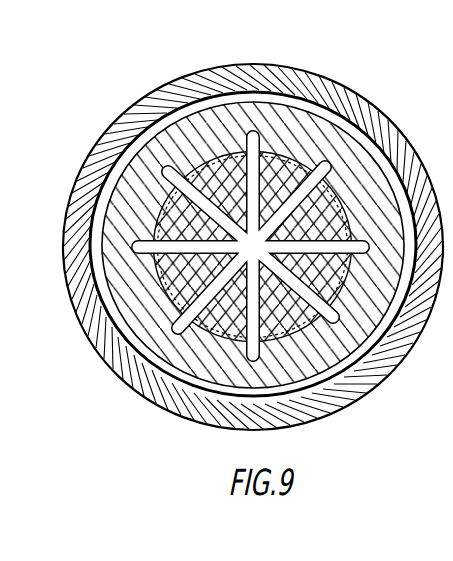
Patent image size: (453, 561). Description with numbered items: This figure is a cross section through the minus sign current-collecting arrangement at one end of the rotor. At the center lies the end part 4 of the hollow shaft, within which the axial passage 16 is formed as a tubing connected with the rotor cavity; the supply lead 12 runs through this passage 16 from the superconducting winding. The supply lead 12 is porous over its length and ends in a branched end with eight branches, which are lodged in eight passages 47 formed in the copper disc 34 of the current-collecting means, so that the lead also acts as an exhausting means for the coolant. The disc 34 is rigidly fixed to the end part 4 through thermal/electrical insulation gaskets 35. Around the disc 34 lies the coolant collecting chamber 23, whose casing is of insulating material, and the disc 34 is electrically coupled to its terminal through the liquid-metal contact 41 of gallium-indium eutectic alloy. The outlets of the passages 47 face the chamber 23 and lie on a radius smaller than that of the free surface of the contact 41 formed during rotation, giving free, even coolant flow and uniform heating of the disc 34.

The coolant collecting chamber 23 is at (315, 90).
The contact 41 is at (355, 363).
The disc 34 is at (172, 130).
The passages 47 is at (107, 248).
The end part of the hollow shaft 4 is at (217, 322).
The thermal/electrical insulation gaskets 35 is at (200, 160).
The axial passage 16 is at (287, 228).
The supply lead 12 is at (250, 182).